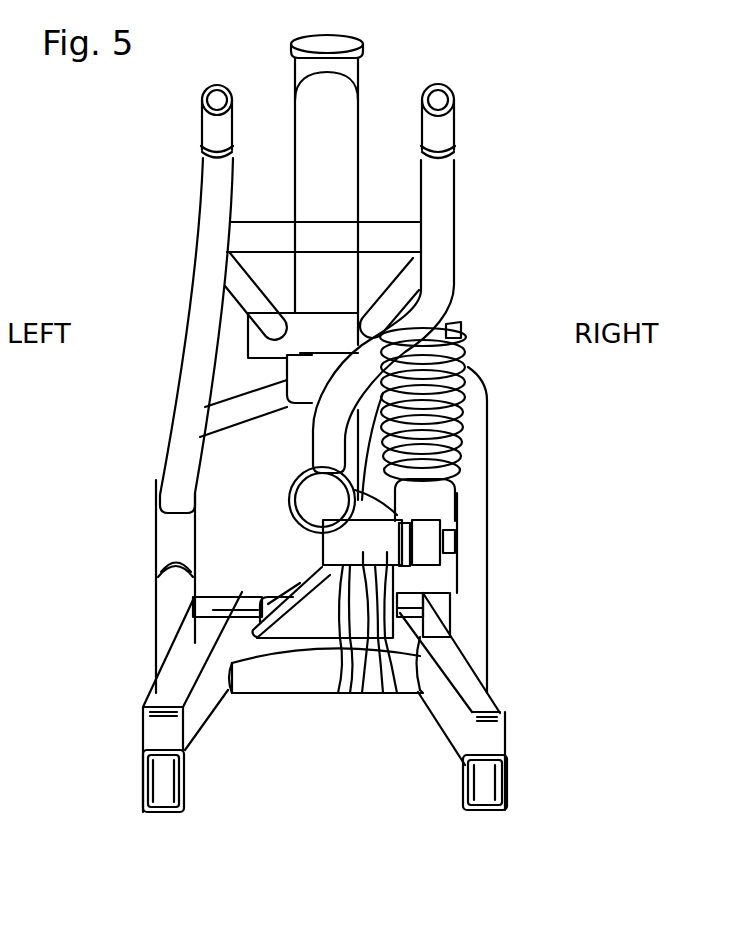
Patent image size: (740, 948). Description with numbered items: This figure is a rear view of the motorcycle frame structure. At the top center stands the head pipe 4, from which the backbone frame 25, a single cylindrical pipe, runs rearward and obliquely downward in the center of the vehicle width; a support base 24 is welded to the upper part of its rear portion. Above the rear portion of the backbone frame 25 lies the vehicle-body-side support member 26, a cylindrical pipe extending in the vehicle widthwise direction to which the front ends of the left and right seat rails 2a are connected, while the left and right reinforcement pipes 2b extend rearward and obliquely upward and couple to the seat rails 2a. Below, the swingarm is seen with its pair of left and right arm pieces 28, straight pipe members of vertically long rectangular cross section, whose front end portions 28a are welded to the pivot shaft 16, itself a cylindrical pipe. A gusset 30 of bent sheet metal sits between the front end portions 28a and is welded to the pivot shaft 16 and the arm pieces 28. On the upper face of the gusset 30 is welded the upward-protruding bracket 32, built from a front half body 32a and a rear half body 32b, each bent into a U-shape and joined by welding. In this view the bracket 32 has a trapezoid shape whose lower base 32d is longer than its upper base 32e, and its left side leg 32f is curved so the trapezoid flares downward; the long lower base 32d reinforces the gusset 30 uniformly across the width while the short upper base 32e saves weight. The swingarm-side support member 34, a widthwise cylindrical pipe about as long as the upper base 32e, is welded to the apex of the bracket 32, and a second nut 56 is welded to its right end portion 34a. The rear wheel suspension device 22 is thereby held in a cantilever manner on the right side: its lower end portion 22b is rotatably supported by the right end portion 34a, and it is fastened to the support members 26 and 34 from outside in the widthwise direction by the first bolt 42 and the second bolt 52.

The head pipe 4 is at (355, 67).
The seat rails 2a is at (207, 133).
The reinforcement pipes 2b is at (190, 368).
The vehicle-body-side support member 26 is at (327, 330).
The support base 24 is at (303, 385).
The backbone frame 25 is at (303, 435).
The first bolt 42 is at (458, 328).
The rear wheel suspension device 22 is at (447, 398).
The lower end portion of the rear wheel suspension device 22b is at (425, 537).
The second bolt 52 is at (453, 535).
The second nut 56 is at (289, 498).
The front end portions of the arm pieces 28a is at (233, 600).
The pivot shaft 16 is at (442, 606).
The front half body 32a is at (303, 587).
The left side leg 32f is at (260, 617).
The gusset 30 is at (240, 645).
The arm pieces 28 is at (168, 698).
The bracket 32 is at (283, 645).
The rear half body 32b is at (313, 632).
The lower base 32d is at (337, 620).
The upper base 32e is at (334, 610).
The swingarm-side support member 34 is at (378, 600).
The right end portion of the swingarm-side support member 34a is at (420, 692).